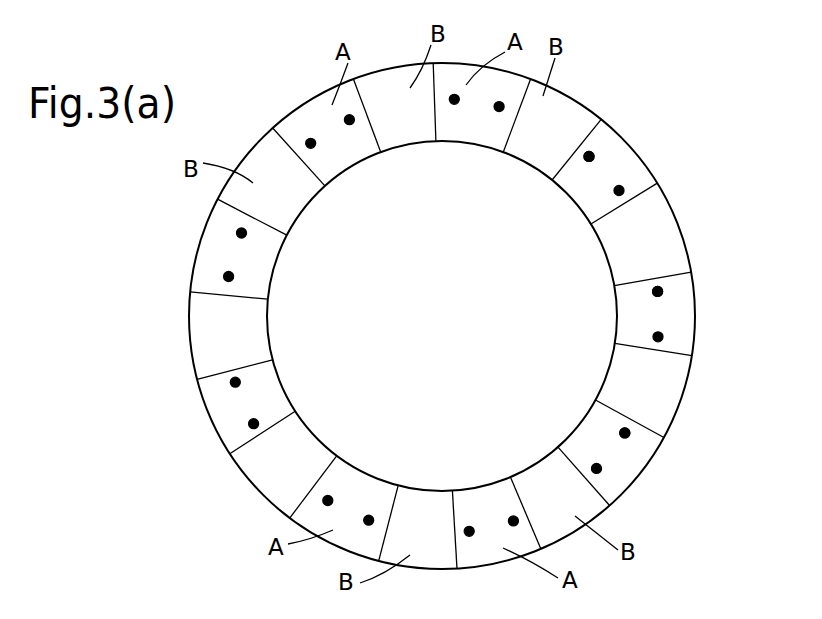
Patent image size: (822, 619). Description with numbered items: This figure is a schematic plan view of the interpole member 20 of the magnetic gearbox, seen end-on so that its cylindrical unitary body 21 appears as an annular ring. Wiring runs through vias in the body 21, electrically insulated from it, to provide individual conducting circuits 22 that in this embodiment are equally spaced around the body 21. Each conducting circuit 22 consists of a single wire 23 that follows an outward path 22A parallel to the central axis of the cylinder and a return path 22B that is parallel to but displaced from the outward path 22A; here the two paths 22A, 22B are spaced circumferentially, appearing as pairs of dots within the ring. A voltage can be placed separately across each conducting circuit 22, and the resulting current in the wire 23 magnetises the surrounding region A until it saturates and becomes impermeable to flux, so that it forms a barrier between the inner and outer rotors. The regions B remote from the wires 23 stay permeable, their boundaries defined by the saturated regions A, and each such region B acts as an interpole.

The interpole member 20 is at (276, 98).
The cylindrical unitary body 21 is at (573, 113).
The conducting circuit 22 is at (620, 314).
The outward path 22A is at (593, 156).
The return path 22B is at (622, 191).
The wire 23 is at (592, 155).